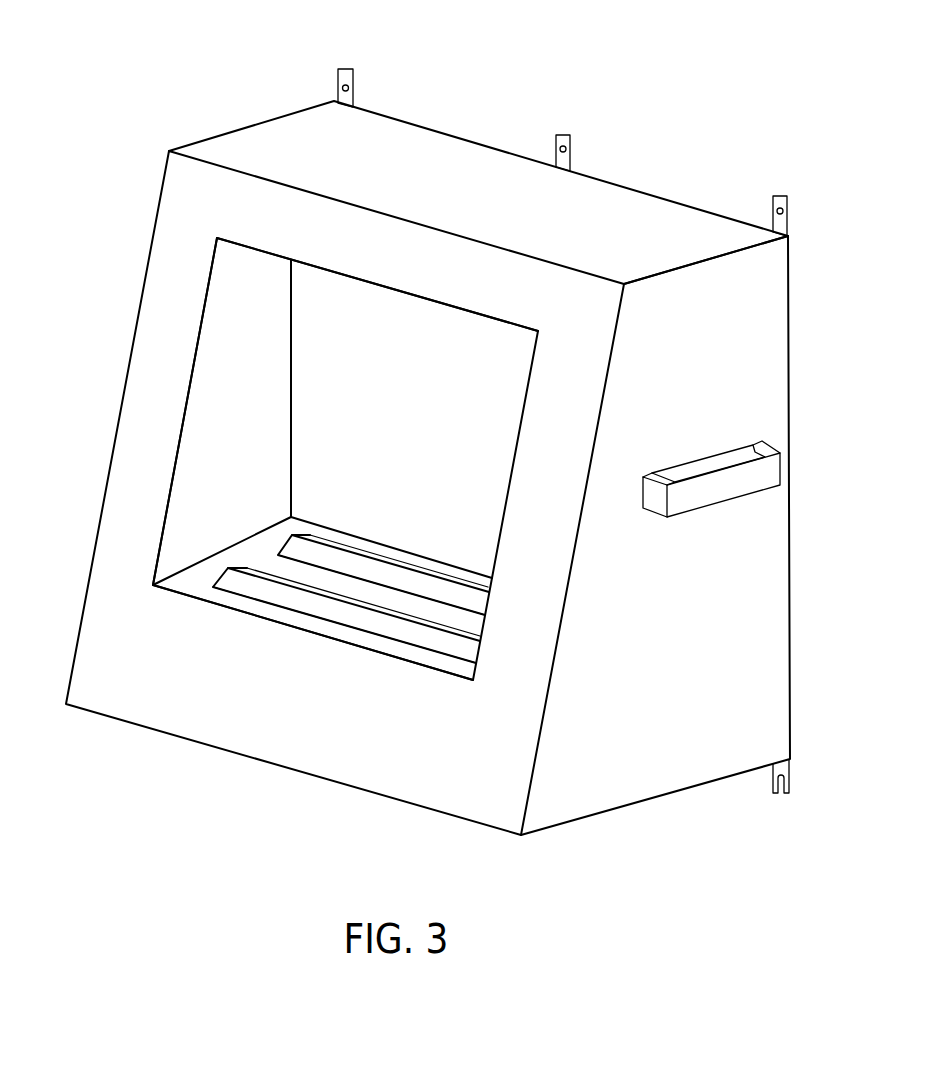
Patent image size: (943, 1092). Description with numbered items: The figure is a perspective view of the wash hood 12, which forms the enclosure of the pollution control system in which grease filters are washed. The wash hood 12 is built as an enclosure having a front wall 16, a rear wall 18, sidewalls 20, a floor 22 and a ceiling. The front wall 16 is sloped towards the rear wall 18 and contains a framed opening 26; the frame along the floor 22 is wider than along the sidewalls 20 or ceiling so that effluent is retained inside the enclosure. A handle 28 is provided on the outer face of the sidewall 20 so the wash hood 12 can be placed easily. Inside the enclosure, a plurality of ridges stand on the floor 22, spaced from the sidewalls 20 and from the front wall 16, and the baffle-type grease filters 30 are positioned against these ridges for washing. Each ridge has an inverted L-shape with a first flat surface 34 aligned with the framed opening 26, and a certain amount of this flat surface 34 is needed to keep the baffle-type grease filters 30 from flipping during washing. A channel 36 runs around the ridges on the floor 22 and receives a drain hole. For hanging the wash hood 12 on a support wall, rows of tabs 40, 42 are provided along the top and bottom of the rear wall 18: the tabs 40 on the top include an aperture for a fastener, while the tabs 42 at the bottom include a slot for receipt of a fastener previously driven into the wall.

The wash hood 12 is at (799, 323).
The front wall 16 is at (295, 715).
The rear wall 18 is at (401, 408).
The sidewalls 20 is at (248, 422).
The floor 22 is at (194, 584).
The framed opening 26 is at (178, 464).
The handles 28 is at (782, 465).
The baffle-type grease filters 30 is at (375, 610).
The first flat surface 34 is at (420, 587).
The channel 36 is at (262, 557).
The tabs 40 is at (344, 68).
The tabs 42 is at (791, 770).